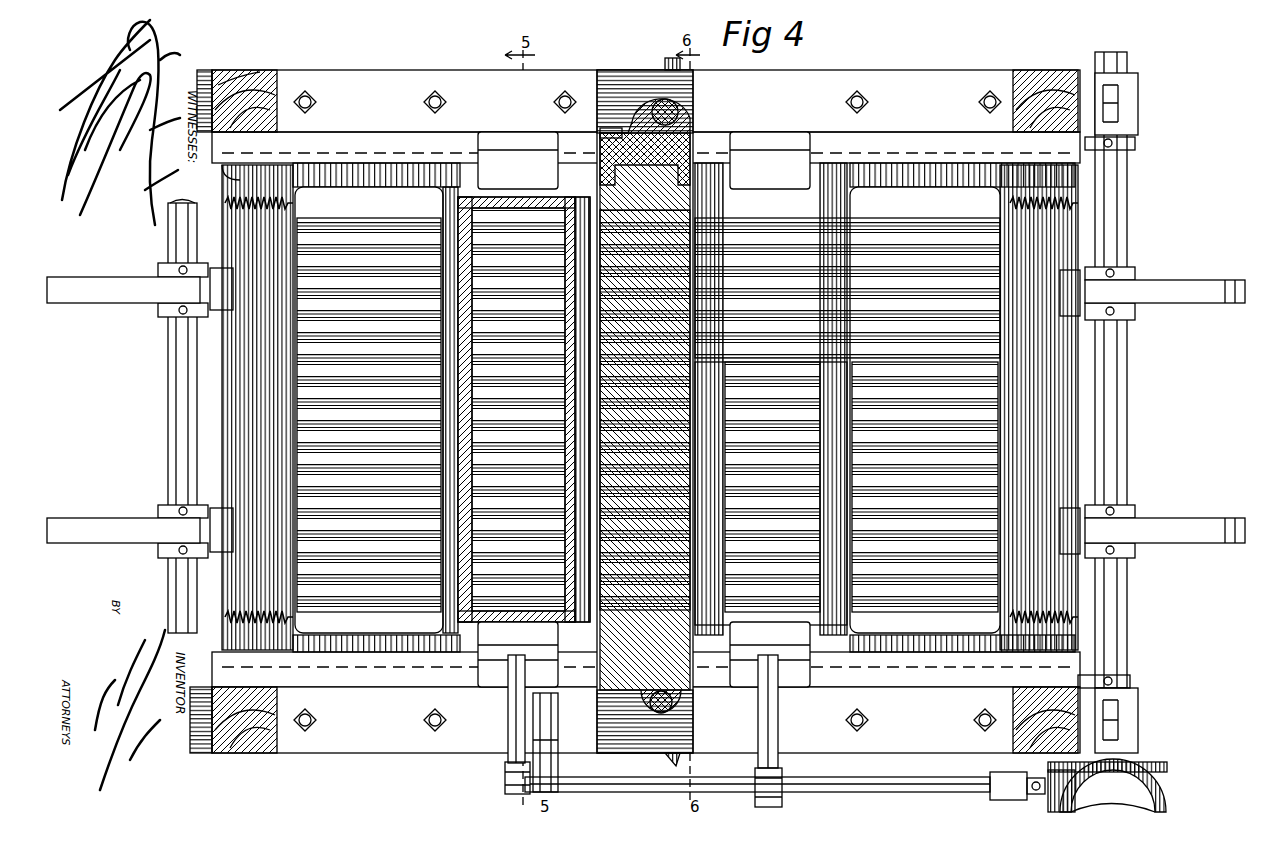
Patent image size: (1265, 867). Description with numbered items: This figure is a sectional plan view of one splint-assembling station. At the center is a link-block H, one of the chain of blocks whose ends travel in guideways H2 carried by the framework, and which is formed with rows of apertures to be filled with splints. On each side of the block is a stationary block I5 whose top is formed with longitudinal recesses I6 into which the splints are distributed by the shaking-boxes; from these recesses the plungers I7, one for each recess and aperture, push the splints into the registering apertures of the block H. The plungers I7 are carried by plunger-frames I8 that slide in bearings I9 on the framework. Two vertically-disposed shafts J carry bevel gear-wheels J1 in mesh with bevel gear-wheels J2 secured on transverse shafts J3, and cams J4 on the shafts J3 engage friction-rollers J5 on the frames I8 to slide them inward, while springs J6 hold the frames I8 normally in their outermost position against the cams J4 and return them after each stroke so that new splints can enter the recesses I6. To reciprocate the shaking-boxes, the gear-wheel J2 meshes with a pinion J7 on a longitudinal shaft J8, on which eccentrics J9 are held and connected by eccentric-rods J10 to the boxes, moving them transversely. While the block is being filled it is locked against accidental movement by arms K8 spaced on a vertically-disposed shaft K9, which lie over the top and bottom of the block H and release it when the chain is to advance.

The stationary block I5 is at (468, 455).
The recesses I6 is at (268, 205).
The plungers I7 is at (360, 248).
The plunger-frames I8 is at (215, 404).
The bearings I9 is at (362, 142).
The vertically-disposed shafts J is at (613, 502).
The bevel gear-wheel J1 is at (1152, 802).
The bevel gear-wheel J2 is at (1148, 764).
The transverse shaft J3 is at (1120, 213).
The cams J4 is at (122, 295).
The friction-rollers J5 is at (1075, 290).
The springs J6 is at (1030, 195).
The pinion J7 is at (1050, 802).
The shaft J8 is at (945, 792).
The eccentrics J9 is at (505, 795).
The eccentric-rods J10 is at (508, 716).
The arms K8 is at (665, 62).
The vertically-disposed shaft K9 is at (692, 108).
The blocks H is at (690, 162).
The guideways H2 is at (600, 130).